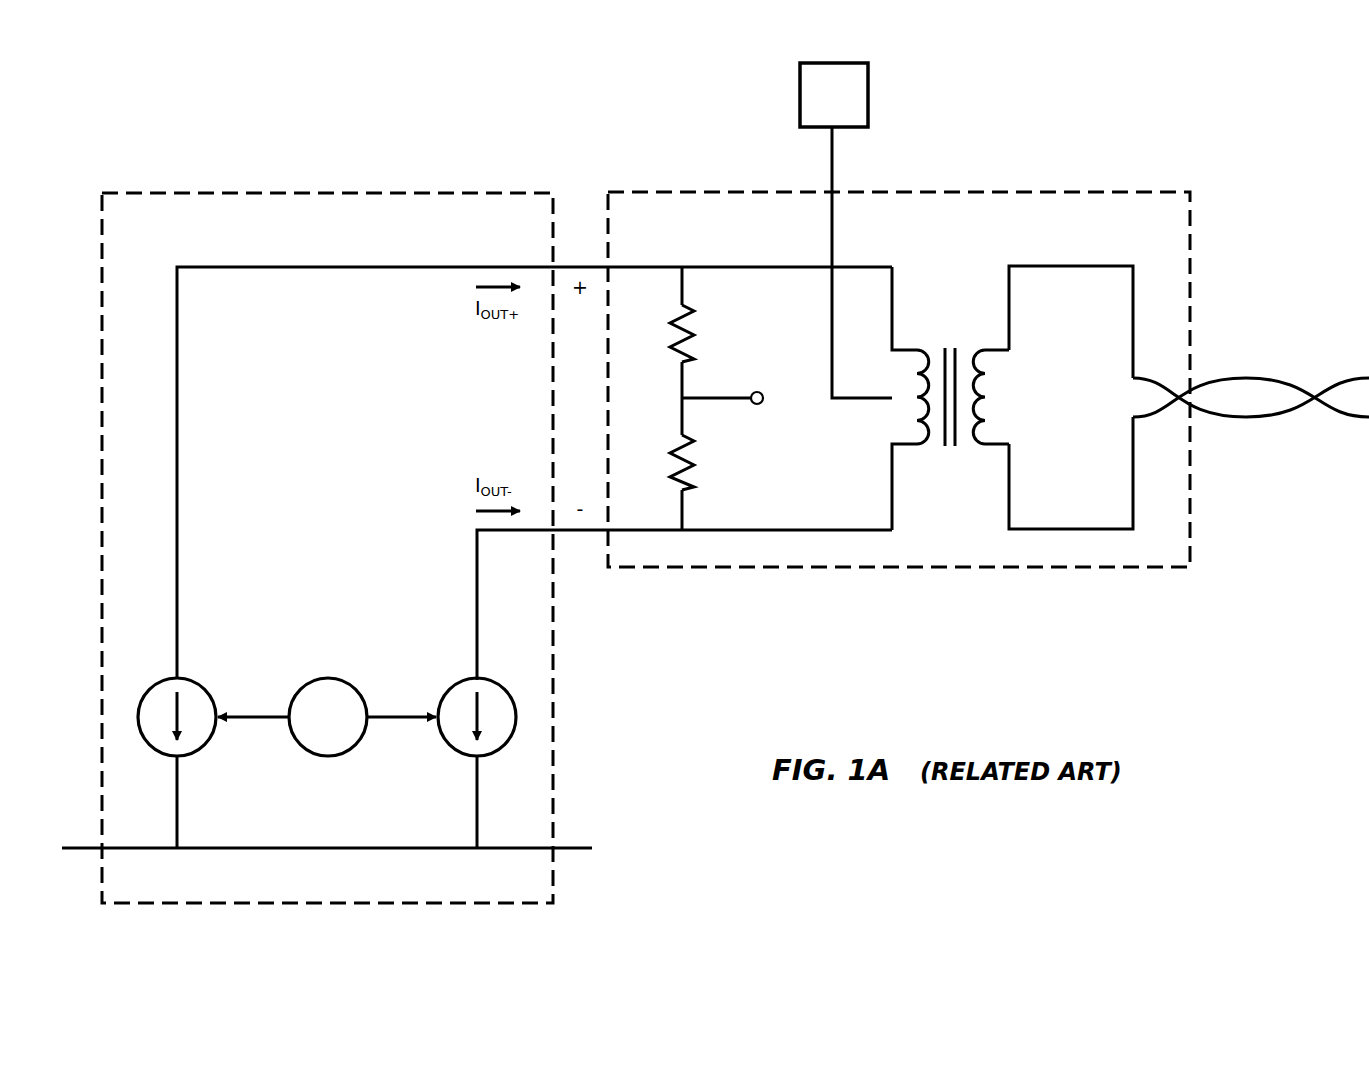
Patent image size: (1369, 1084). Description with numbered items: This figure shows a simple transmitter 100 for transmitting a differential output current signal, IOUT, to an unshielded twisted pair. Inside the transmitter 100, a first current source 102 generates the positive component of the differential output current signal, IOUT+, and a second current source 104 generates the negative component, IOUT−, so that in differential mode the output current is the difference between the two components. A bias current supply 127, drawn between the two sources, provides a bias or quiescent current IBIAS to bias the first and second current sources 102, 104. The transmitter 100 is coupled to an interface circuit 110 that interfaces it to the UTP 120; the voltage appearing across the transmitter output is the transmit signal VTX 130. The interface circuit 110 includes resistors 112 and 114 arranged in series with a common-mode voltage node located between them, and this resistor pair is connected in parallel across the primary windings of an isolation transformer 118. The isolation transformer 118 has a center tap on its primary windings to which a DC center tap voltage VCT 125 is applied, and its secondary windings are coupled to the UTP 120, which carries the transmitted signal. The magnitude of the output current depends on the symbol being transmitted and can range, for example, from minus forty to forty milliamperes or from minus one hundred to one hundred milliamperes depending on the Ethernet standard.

The transmitter 100 is at (553, 648).
The first current source 102 is at (196, 680).
The second current source 104 is at (452, 683).
The interface circuit 110 is at (790, 568).
The resistor 112 is at (690, 325).
The resistor 114 is at (690, 472).
The isolation transformer 118 is at (953, 455).
The UTP 120 is at (1255, 420).
The center tap voltage 125 is at (868, 93).
The bias current supply 127 is at (352, 750).
The transmit signal 130 is at (553, 398).